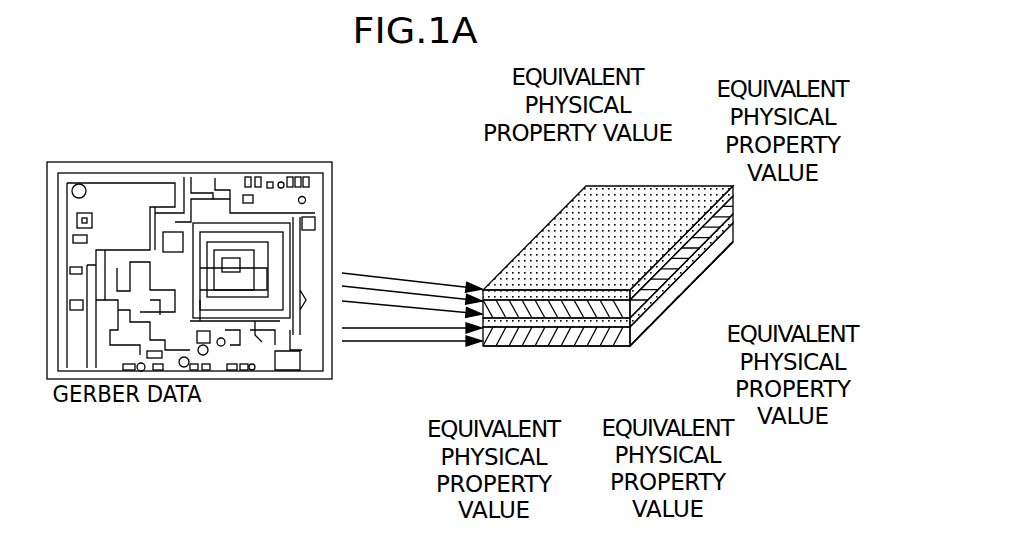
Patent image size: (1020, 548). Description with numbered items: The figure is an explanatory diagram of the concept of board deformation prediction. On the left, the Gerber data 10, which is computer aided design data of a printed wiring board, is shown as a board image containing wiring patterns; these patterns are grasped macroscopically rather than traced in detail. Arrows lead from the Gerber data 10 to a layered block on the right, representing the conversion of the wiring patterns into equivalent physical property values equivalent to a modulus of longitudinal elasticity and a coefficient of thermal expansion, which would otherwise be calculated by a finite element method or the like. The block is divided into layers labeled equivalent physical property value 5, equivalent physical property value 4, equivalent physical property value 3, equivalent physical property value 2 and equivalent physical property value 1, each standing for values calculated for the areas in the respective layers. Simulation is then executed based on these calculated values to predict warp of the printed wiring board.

The Gerber data 10 is at (288, 162).
The equivalent physical property value 5 is at (603, 195).
The equivalent physical property value 4 is at (728, 214).
The equivalent physical property value 3 is at (668, 285).
The equivalent physical property value 2 is at (605, 333).
The equivalent physical property value 1 is at (493, 347).